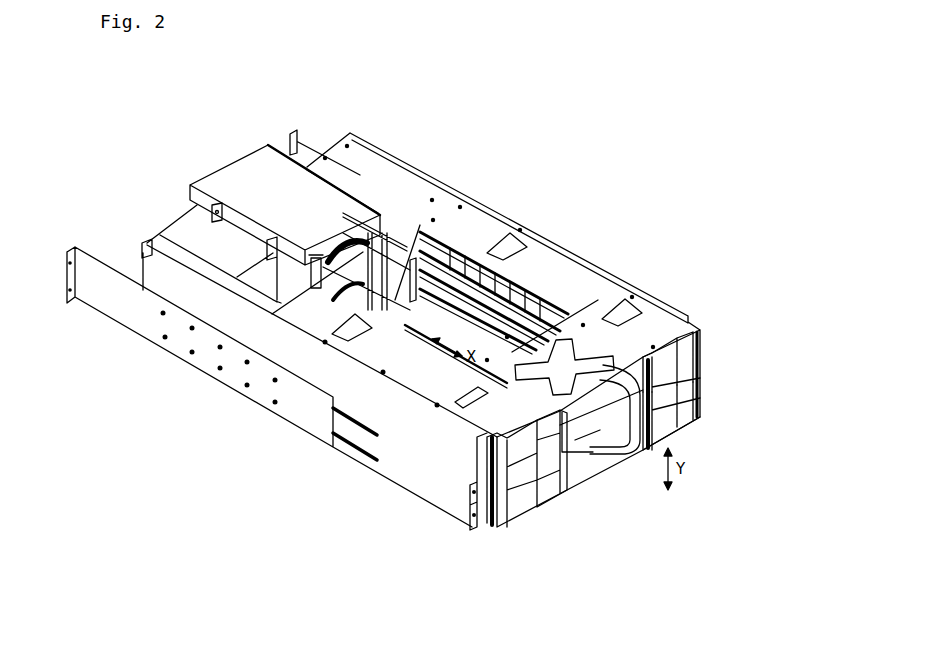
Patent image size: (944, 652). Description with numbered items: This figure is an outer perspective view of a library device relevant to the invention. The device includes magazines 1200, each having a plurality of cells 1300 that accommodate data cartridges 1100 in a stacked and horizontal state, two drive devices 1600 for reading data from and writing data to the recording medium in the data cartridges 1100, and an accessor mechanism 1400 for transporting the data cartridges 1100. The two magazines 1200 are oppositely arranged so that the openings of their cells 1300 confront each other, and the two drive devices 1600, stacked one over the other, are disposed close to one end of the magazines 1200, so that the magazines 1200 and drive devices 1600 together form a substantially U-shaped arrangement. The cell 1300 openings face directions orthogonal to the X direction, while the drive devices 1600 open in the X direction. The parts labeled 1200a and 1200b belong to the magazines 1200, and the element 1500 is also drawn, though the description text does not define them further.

The data cartridges 1100 is at (428, 303).
The magazines 1200 is at (538, 272).
The lower housing part 1200a is at (504, 512).
The upper housing part 1200b is at (478, 460).
The cells 1300 is at (557, 323).
The accessor mechanism 1400 is at (613, 352).
The connector 1500 is at (593, 433).
The drive devices 1600 is at (392, 238).